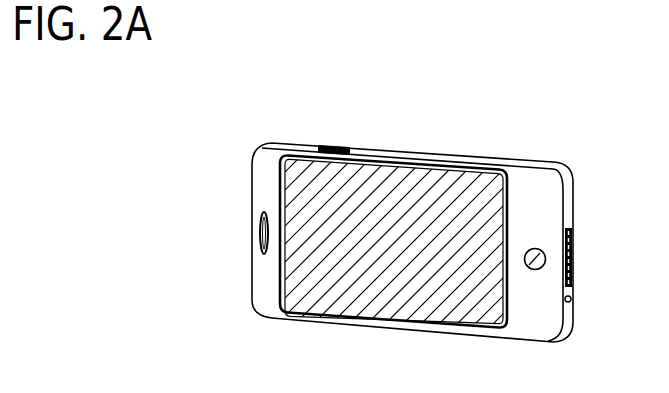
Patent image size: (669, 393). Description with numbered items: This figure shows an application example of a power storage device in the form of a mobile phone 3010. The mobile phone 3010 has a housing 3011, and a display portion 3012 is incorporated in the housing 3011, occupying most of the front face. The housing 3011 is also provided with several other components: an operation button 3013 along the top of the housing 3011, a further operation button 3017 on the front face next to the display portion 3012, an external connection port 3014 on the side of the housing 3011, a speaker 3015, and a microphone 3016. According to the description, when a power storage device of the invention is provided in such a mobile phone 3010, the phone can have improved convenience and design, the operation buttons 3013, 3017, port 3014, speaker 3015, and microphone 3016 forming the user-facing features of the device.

The mobile phone 3010 is at (518, 122).
The housing 3011 is at (540, 313).
The display portion 3012 is at (302, 212).
The operation button 3013 is at (337, 145).
The external connection port 3014 is at (574, 253).
The speaker 3015 is at (260, 237).
The microphone 3016 is at (571, 304).
The operation button 3017 is at (537, 249).